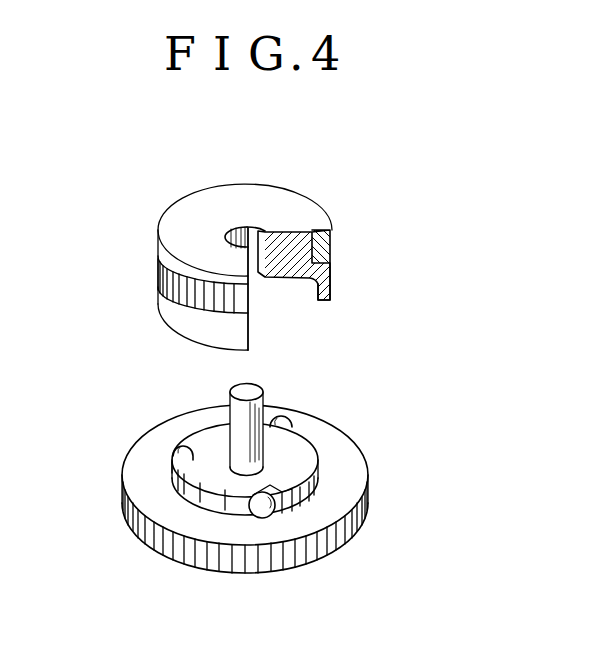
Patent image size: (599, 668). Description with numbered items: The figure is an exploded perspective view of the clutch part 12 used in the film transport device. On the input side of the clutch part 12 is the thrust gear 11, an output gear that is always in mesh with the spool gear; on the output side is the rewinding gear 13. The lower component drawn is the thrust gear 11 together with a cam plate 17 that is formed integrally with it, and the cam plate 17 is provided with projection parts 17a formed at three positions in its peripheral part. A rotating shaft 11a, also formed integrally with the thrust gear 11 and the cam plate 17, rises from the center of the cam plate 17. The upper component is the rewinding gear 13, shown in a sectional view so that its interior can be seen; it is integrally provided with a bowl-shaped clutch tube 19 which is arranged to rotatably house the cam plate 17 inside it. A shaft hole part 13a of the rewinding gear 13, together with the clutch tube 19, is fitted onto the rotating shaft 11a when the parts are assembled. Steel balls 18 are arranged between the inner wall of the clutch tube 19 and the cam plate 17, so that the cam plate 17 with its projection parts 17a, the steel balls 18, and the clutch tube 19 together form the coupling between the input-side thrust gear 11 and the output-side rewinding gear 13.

The thrust gear 11 is at (348, 447).
The rotating shaft 11a is at (247, 386).
The clutch part 12 is at (357, 383).
The rewinding gear 13 is at (332, 243).
The shaft hole part 13a is at (250, 234).
The cam plate 17 is at (300, 455).
The projection parts 17a is at (217, 422).
The steel balls 18 is at (267, 517).
The clutch tube 19 is at (333, 288).